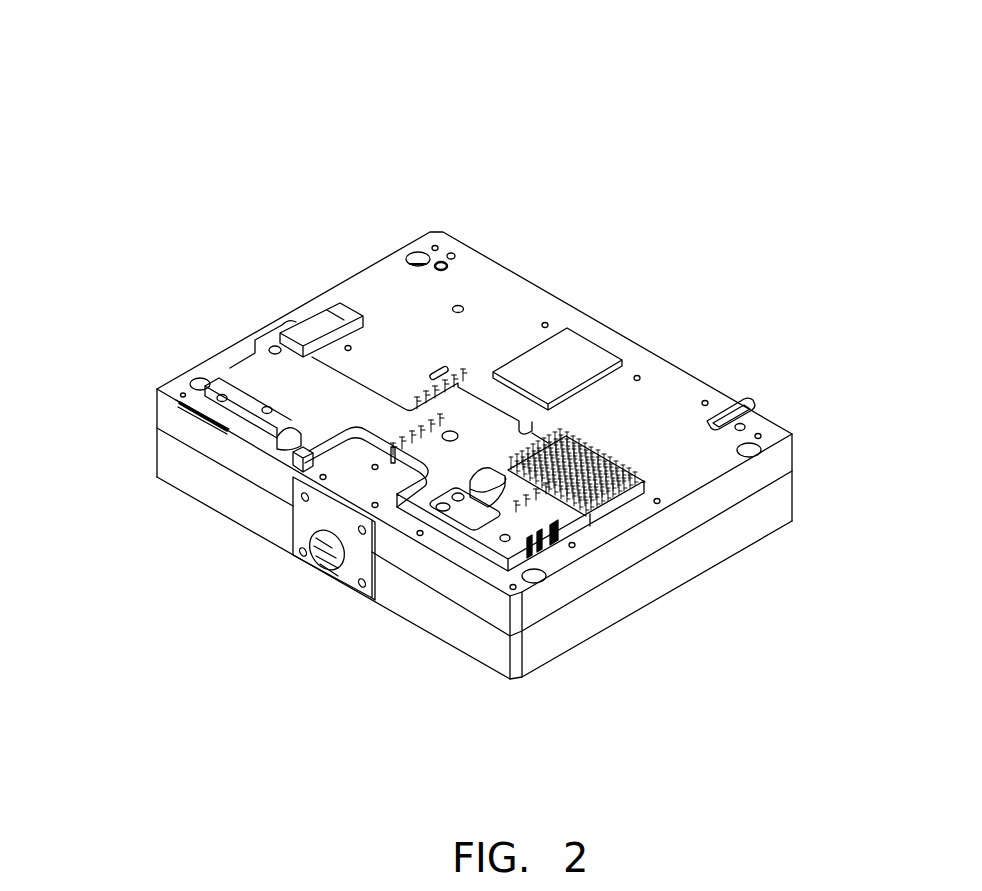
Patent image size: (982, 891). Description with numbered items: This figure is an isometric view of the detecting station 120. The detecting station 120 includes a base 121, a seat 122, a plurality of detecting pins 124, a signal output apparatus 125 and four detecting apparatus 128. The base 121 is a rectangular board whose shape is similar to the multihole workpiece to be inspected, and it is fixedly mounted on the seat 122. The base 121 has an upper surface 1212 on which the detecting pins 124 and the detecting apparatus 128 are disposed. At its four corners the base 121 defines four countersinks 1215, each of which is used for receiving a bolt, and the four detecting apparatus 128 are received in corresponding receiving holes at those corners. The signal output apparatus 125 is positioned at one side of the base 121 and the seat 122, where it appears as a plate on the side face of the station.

The detecting station 120 is at (492, 37).
The base 121 is at (667, 532).
The upper surface 1212 is at (690, 473).
The countersink 1215 is at (418, 255).
The seat 122 is at (172, 470).
The detecting pins 124 is at (458, 378).
The signal output apparatus 125 is at (357, 562).
The detecting apparatus 128 is at (441, 262).